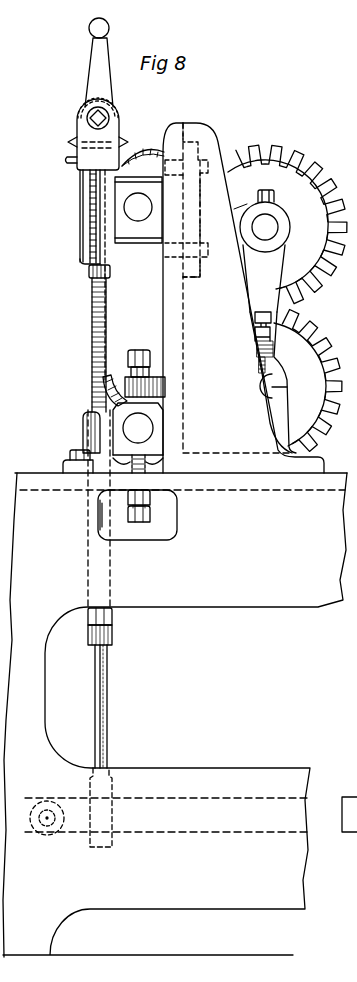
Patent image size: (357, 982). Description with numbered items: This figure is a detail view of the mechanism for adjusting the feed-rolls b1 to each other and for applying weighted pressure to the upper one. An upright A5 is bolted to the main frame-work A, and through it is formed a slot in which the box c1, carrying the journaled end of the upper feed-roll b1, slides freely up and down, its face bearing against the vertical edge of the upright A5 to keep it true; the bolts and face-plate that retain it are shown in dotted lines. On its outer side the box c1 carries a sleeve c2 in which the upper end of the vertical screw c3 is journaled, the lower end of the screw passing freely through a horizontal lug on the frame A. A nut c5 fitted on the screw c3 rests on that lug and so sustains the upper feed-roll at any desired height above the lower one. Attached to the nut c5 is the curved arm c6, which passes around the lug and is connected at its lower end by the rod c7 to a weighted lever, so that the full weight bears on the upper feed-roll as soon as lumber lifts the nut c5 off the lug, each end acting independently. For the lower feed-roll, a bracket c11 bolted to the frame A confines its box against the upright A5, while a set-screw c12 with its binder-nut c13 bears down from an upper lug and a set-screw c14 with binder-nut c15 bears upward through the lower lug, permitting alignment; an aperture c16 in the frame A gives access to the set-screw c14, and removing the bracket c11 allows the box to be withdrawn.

The box c1 is at (201, 141).
The sleeve c2 is at (77, 207).
The vertical screw c3 is at (89, 312).
The nut c5 is at (82, 430).
The curved arm c6 is at (115, 630).
The rod c7 is at (108, 690).
The bracket c11 is at (75, 463).
The set-screw c12 is at (150, 354).
The binder-nut c13 is at (152, 373).
The set-screw c14 is at (160, 389).
The binder-nut c15 is at (151, 497).
The aperture c16 is at (122, 530).
The feed-roll b1 is at (147, 150).
The main frame-work A is at (180, 715).
The upright A5 is at (255, 298).